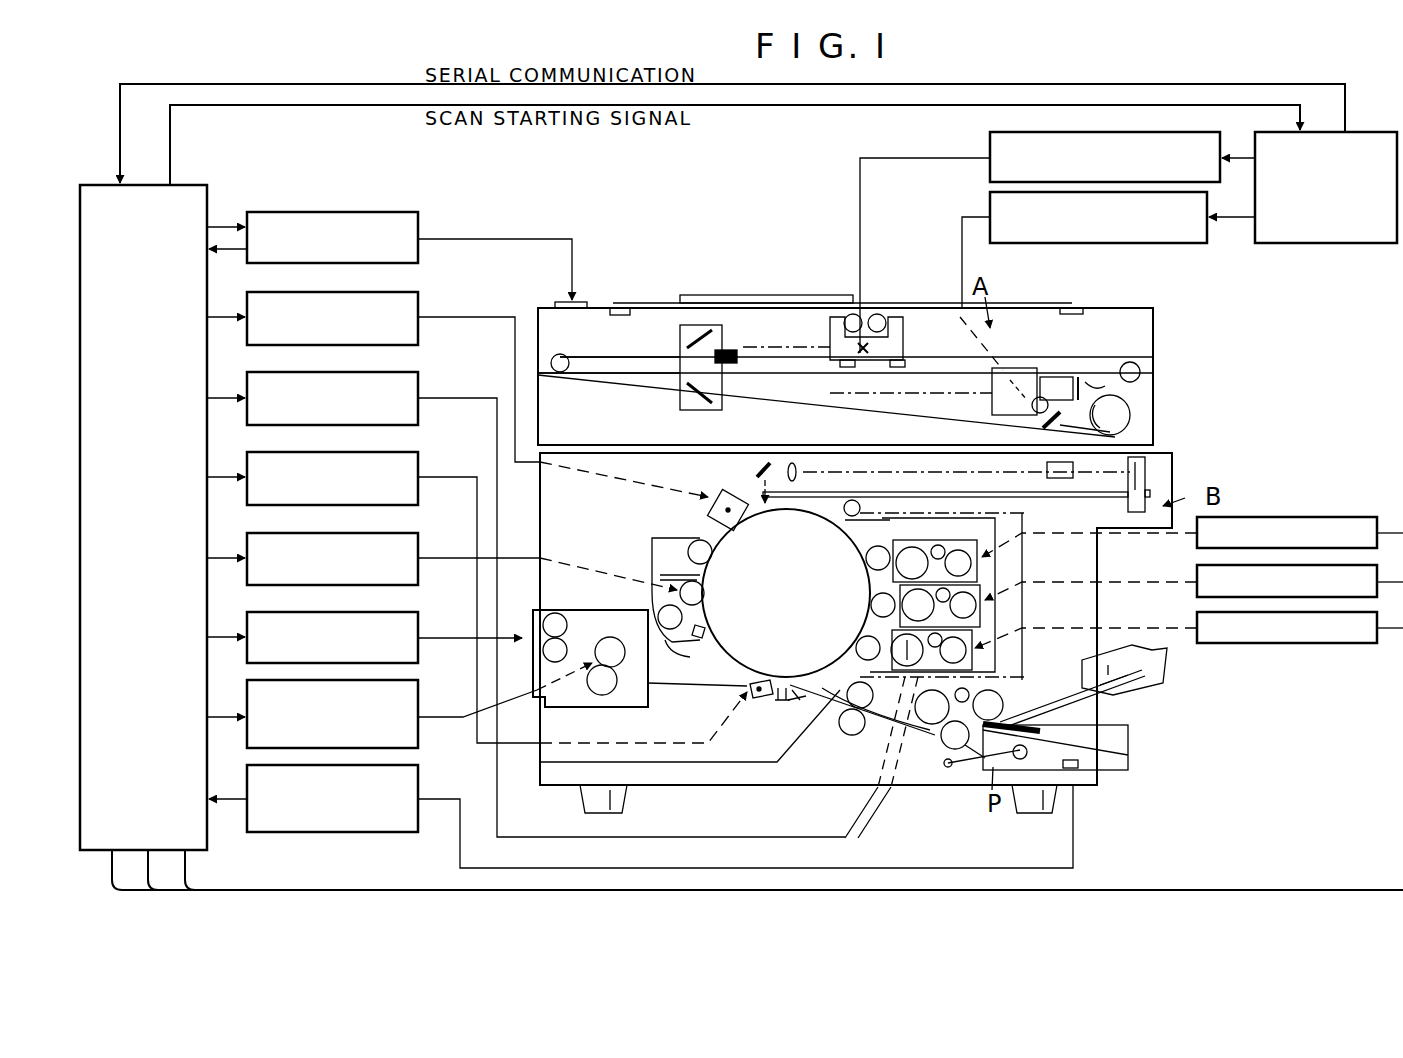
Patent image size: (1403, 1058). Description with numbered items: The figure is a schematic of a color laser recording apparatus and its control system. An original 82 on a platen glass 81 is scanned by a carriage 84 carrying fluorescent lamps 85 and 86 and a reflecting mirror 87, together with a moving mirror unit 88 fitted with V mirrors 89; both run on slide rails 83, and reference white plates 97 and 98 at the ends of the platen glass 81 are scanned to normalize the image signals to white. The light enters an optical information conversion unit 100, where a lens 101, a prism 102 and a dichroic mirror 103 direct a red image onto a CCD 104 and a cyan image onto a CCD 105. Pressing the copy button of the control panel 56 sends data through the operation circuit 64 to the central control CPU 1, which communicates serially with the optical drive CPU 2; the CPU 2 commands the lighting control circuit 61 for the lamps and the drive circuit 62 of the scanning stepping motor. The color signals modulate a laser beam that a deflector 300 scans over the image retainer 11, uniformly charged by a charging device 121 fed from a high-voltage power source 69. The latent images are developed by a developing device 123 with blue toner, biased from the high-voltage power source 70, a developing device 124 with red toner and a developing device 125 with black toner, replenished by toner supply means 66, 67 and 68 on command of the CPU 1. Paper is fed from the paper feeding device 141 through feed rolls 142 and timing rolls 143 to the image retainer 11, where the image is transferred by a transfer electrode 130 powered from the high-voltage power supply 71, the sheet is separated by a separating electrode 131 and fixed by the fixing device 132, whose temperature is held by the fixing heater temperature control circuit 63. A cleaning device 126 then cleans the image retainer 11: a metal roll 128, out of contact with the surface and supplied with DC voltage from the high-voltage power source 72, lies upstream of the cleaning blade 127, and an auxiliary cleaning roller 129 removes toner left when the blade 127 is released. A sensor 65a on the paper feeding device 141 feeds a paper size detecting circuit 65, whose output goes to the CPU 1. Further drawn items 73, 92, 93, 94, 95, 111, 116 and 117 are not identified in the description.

The central control CPU 1 is at (143, 517).
The optical drive CPU 2 is at (1326, 187).
The image retainer 11 is at (748, 627).
The control panel 56 is at (562, 302).
The lighting control circuit 61 is at (990, 140).
The drive circuit 62 is at (990, 197).
The fixing heater temperature control circuit 63 is at (420, 702).
The operation circuit 64 is at (420, 222).
The paper size detecting circuit 65 is at (420, 786).
The sensor 65a is at (1073, 768).
The toner supply means 66 is at (1197, 578).
The toner supply means 67 is at (1320, 517).
The toner supply means 68 is at (1318, 643).
The high-voltage power source 69 is at (420, 302).
The high-voltage power source 70 is at (420, 382).
The high-voltage power supply 71 is at (420, 462).
The high-voltage power source 72 is at (420, 542).
The main motor drive circuit 73 is at (420, 622).
The platen glass 81 is at (1030, 303).
The original 82 is at (772, 295).
The slide rails 83 is at (615, 355).
The carriage 84 is at (905, 318).
The fluorescent lamp 85 is at (858, 318).
The fluorescent lamp 86 is at (880, 318).
The reflecting mirror 87 is at (870, 348).
The moving mirror unit 88 is at (680, 402).
The V mirrors 89 is at (703, 345).
The pulley 92 is at (1140, 366).
The pulley 93 is at (560, 354).
The lens 94 is at (740, 353).
The wire 95 is at (598, 378).
The reference white plate 97 is at (617, 308).
The reference white plate 98 is at (1078, 308).
The optical information conversion unit 100 is at (1045, 377).
The lens 101 is at (992, 405).
The prism 102 is at (1075, 385).
The dichroic mirror 103 is at (1055, 377).
The CCD 104 is at (1105, 388).
The CCD 105 is at (1045, 425).
The motor 111 is at (1135, 410).
The lens 116 is at (793, 462).
The mirror 117 is at (755, 468).
The charging device 121 is at (712, 498).
The developing device 123 is at (995, 585).
The developing device 124 is at (995, 540).
The developing device 125 is at (995, 628).
The cleaning device 126 is at (655, 538).
The cleaning blade 127 is at (677, 580).
The metal roll 128 is at (671, 658).
The auxiliary cleaning roller 129 is at (697, 540).
The transfer electrode 130 is at (780, 700).
The separating electrode 131 is at (746, 690).
The fixing device 132 is at (583, 620).
The paper feeding device 141 is at (1128, 745).
The feed rolls 142 is at (1005, 694).
The timing rolls 143 is at (842, 727).
The deflector 300 is at (1150, 467).